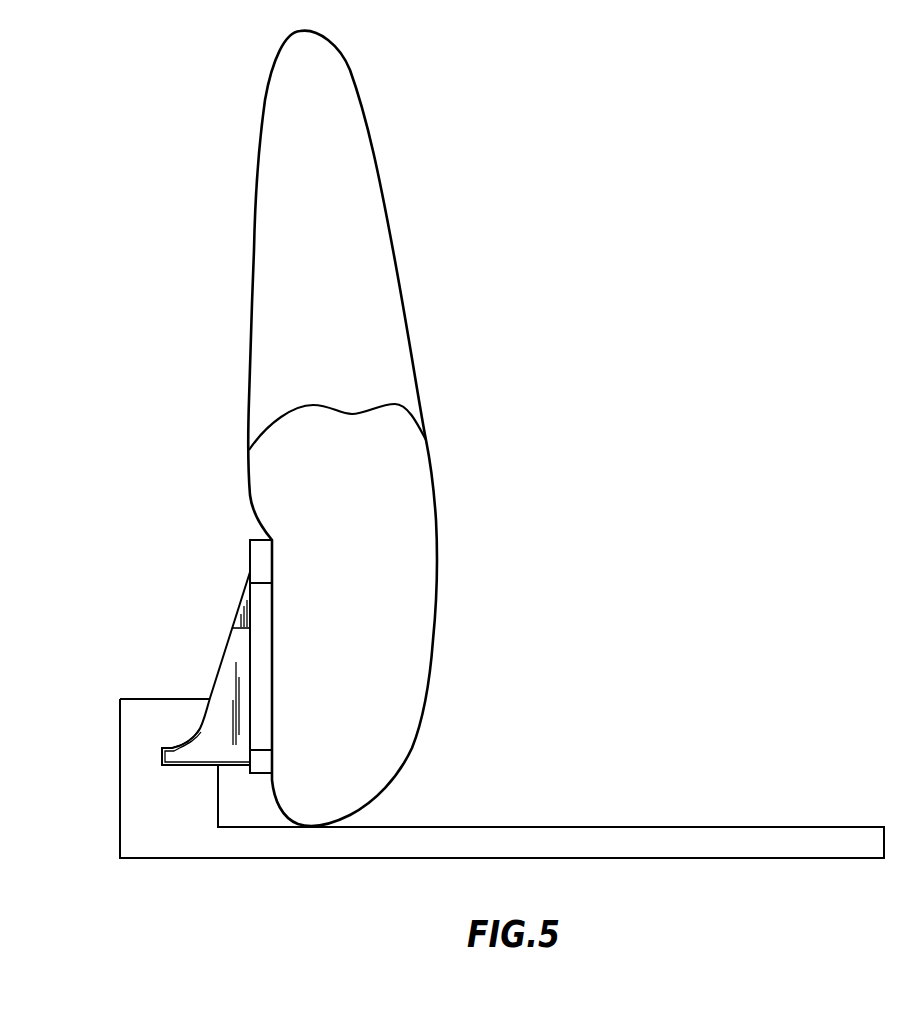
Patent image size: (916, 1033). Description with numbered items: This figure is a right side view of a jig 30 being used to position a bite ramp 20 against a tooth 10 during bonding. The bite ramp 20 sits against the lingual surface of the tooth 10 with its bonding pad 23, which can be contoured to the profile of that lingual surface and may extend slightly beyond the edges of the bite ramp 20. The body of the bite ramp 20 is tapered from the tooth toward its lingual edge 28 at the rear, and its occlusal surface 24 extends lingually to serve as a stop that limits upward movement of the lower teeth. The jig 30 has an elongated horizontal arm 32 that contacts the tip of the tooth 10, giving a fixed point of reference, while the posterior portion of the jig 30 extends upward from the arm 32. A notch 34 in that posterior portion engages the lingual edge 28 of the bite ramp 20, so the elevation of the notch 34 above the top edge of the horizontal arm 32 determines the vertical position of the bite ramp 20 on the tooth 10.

The tooth 10 is at (437, 531).
The bite ramp 20 is at (156, 642).
The bonding pad 23 is at (259, 548).
The occlusal surface 24 is at (178, 768).
The lingual edge 28 is at (162, 753).
The jig 30 is at (551, 773).
The horizontal arm 32 is at (508, 842).
The notch 34 is at (195, 728).